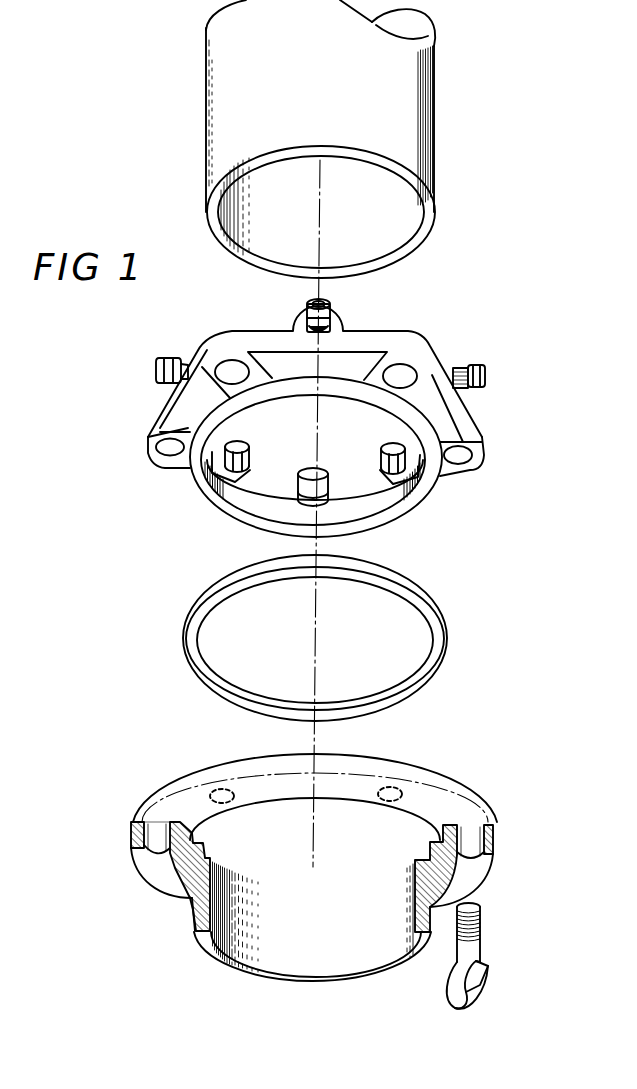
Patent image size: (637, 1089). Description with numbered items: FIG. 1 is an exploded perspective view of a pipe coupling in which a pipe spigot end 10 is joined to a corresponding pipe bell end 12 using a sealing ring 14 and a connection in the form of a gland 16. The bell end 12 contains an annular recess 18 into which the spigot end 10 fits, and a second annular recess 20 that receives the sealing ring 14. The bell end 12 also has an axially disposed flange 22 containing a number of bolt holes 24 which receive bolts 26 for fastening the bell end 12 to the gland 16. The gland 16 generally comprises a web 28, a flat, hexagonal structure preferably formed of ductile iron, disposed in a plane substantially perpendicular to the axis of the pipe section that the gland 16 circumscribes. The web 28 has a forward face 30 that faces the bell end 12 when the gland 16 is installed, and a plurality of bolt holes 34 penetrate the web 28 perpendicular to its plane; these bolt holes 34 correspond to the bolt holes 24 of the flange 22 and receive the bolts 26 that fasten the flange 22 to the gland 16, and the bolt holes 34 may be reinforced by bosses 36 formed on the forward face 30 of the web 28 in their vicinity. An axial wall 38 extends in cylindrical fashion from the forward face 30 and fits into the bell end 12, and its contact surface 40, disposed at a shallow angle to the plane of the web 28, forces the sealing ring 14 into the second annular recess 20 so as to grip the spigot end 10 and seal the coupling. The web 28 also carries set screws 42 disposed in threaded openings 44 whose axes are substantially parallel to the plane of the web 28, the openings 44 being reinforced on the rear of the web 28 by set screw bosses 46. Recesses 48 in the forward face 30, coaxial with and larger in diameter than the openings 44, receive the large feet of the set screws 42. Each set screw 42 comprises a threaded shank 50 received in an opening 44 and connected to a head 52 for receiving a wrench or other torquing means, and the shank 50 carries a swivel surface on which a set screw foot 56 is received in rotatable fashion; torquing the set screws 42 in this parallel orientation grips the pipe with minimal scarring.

The pipe spigot end 10 is at (385, 87).
The pipe bell end 12 is at (477, 862).
The sealing ring 14 is at (440, 638).
The gland 16 is at (487, 443).
The annular recess 18 is at (425, 857).
The second annular recess 20 is at (440, 837).
The flange 22 is at (475, 872).
The bolt holes 24 is at (468, 838).
The bolts 26 is at (467, 948).
The web 28 is at (335, 360).
The forward face 30 is at (463, 430).
The bolt holes 34 is at (467, 462).
The mounting lug 36 is at (477, 454).
The axial wall 38 is at (425, 422).
The contact surface 40 is at (427, 483).
The set screws 42 is at (486, 372).
The threaded openings 44 is at (460, 368).
The set screw bosses 46 is at (366, 331).
The recesses 48 is at (396, 484).
The threaded shank 50 is at (167, 383).
The head 52 is at (330, 302).
The set screw foot 56 is at (382, 456).